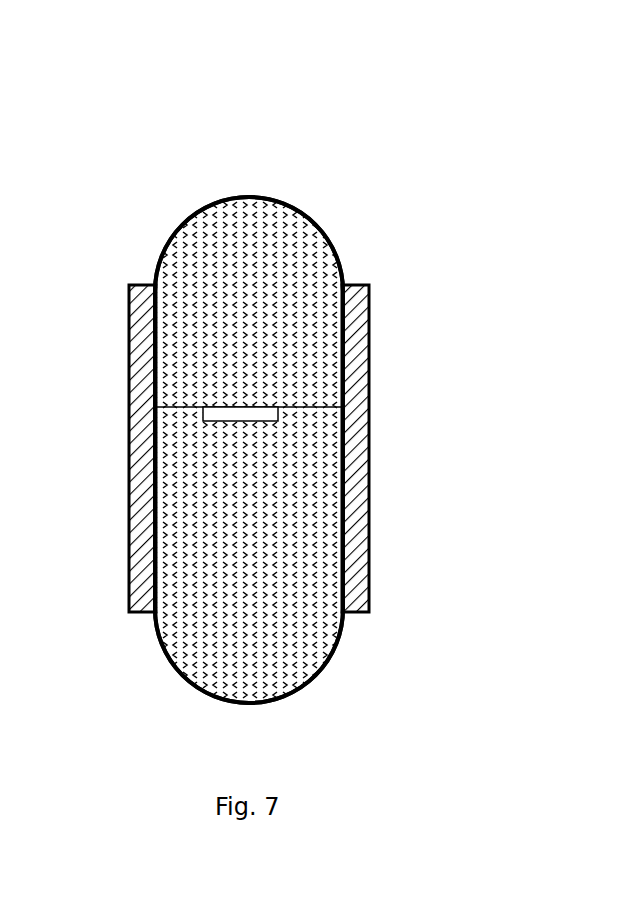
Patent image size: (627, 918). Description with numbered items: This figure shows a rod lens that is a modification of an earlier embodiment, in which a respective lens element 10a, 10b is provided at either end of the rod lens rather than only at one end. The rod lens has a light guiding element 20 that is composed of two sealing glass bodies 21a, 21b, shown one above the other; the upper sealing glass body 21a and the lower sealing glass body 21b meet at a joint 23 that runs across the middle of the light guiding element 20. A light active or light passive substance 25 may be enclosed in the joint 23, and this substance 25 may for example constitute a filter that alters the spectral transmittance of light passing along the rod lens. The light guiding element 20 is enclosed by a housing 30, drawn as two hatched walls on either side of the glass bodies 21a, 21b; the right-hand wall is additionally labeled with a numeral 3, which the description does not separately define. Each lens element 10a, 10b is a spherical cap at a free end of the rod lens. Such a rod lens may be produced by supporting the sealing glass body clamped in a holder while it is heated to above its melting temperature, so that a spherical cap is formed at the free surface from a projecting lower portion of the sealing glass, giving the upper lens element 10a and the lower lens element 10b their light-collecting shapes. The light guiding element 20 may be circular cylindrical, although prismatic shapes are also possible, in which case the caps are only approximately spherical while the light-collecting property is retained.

The lens element 10a is at (272, 222).
The lens element 10b is at (276, 650).
The light guiding element 20 is at (203, 533).
The sealing glass body 21a is at (310, 376).
The sealing glass body 21b is at (312, 508).
The joint 23 is at (303, 410).
The light active or light passive substance 25 is at (237, 421).
The housing 30 is at (118, 335).
The sleeve wall 3 is at (366, 416).